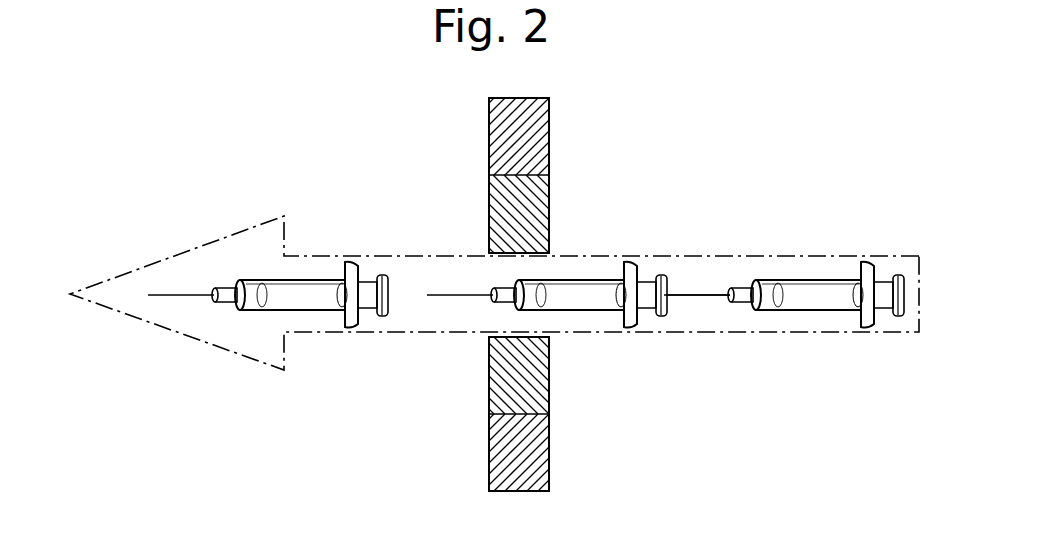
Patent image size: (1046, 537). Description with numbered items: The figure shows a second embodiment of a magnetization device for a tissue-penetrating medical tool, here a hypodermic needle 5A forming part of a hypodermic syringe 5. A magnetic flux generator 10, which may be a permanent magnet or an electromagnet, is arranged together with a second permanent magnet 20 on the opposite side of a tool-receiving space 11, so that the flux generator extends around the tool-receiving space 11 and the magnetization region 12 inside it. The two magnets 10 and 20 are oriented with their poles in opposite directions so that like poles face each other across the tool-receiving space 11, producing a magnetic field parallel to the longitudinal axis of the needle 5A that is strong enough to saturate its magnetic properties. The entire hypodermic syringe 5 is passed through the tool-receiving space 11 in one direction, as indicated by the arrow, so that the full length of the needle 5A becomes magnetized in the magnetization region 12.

The second permanent magnet 20 is at (489, 146).
The magnetic flux generator 10 is at (549, 438).
The tool-receiving space 11 is at (572, 252).
The magnetization region 12 is at (585, 316).
The hypodermic needle 5A is at (702, 295).
The hypodermic syringe 5 is at (812, 290).